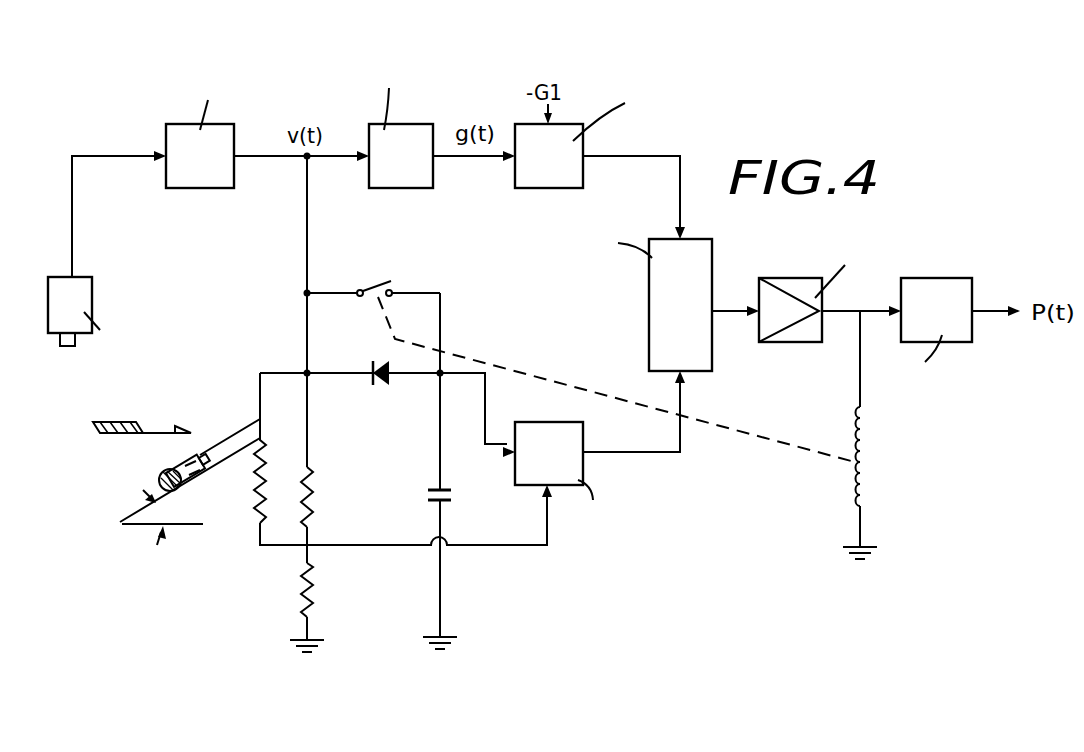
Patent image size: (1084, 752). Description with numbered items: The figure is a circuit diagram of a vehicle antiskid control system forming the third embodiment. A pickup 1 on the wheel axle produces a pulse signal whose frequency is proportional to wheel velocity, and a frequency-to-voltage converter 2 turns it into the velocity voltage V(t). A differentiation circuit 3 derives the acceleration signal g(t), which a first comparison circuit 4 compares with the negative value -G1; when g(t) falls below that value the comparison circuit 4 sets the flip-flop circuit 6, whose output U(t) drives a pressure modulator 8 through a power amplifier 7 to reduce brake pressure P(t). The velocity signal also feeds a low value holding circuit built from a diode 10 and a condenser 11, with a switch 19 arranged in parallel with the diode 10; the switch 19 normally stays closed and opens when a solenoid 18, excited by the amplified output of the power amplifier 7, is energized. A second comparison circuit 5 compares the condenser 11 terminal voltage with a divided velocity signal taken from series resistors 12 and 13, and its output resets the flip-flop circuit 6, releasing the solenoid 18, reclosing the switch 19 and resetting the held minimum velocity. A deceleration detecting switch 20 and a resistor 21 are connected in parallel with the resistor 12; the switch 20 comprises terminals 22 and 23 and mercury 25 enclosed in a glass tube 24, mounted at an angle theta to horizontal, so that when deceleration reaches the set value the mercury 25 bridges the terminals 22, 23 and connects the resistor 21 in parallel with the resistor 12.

The pickup 1 is at (111, 311).
The frequency-to-voltage converter 2 is at (205, 110).
The differentiation circuit 3 is at (425, 111).
The first comparison circuit 4 is at (621, 122).
The second comparison circuit 5 is at (610, 483).
The flip-flop circuit 6 is at (640, 308).
The power amplifier 7 is at (778, 268).
The pressure modulator 8 is at (936, 344).
The diode 10 is at (377, 388).
The condenser 11 is at (462, 499).
The resistor 12 is at (320, 503).
The resistor 13 is at (321, 592).
The solenoid 18 is at (876, 467).
The switch 19 is at (378, 282).
The deceleration detecting switch 20 is at (160, 457).
The resistor 21 is at (250, 507).
The terminal 22 is at (202, 450).
The terminal 23 is at (207, 462).
The glass tube 24 is at (190, 480).
The mercury 25 is at (160, 474).